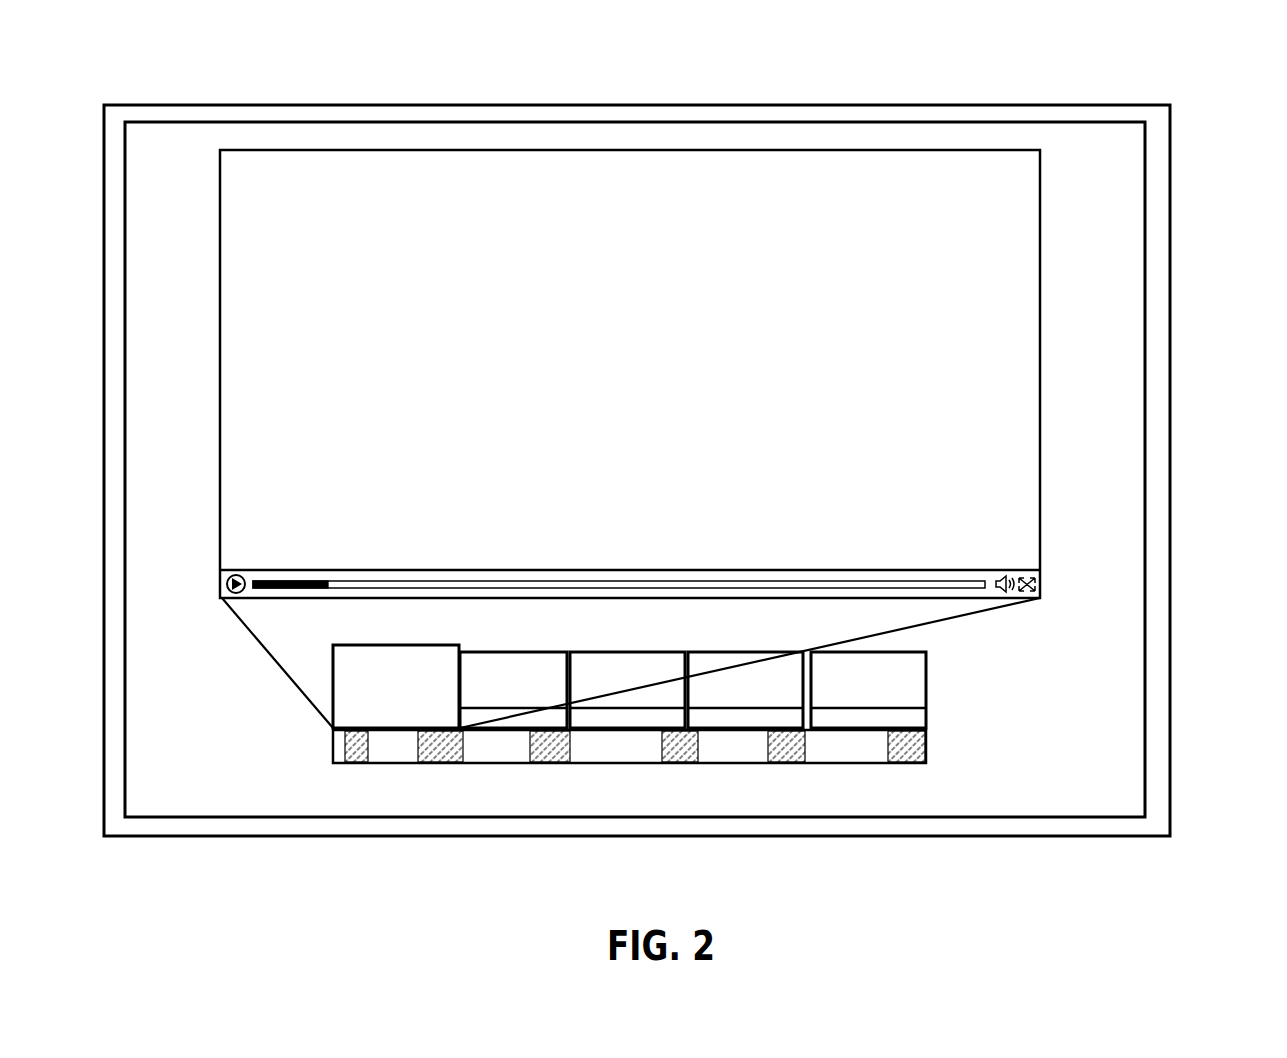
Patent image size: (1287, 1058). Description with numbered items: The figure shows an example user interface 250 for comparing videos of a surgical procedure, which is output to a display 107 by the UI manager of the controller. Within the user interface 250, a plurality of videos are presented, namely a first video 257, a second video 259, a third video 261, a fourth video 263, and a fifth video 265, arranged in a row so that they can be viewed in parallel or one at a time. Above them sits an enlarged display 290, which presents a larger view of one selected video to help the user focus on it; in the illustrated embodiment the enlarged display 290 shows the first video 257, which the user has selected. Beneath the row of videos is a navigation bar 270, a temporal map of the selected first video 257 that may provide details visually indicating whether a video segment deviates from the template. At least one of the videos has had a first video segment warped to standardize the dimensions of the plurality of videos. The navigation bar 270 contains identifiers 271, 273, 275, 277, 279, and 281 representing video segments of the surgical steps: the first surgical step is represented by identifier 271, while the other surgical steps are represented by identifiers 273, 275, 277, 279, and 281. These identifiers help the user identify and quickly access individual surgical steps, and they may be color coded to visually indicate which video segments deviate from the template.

The display 107 is at (1170, 185).
The user interface 250 is at (152, 135).
The enlarged display 290 is at (630, 374).
The first video 257 is at (396, 686).
The second video 259 is at (513, 690).
The third video 261 is at (627, 690).
The fourth video 263 is at (745, 690).
The fifth video 265 is at (868, 690).
The navigation bar 270 is at (332, 731).
The identifier 271 is at (357, 766).
The identifier 273 is at (443, 766).
The identifier 275 is at (550, 766).
The identifier 277 is at (682, 766).
The identifier 279 is at (787, 766).
The identifier 281 is at (903, 766).